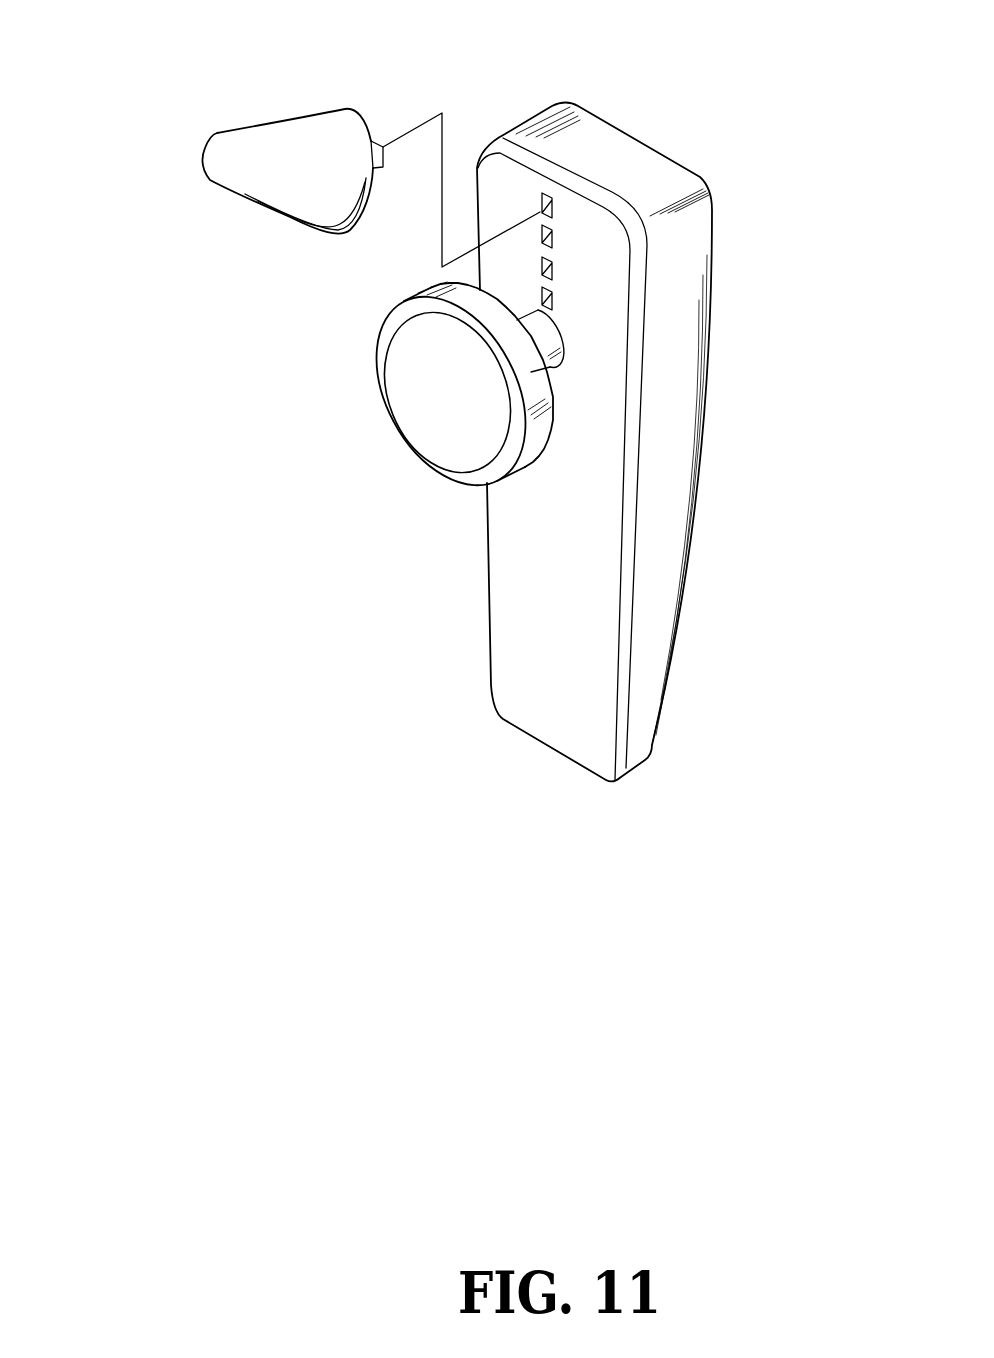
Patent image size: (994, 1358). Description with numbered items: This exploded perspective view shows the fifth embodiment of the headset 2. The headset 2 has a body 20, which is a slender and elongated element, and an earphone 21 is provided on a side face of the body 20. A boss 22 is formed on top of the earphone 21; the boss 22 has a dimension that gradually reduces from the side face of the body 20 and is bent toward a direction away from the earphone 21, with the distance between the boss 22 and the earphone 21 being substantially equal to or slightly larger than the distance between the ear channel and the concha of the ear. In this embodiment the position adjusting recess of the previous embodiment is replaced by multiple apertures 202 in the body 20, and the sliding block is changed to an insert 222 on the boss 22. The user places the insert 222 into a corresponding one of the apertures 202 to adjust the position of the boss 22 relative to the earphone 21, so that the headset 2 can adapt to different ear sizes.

The headset 2 is at (748, 160).
The body 20 is at (658, 477).
The apertures 202 is at (553, 270).
The earphone 21 is at (437, 347).
The boss 22 is at (233, 165).
The insert 222 is at (375, 141).